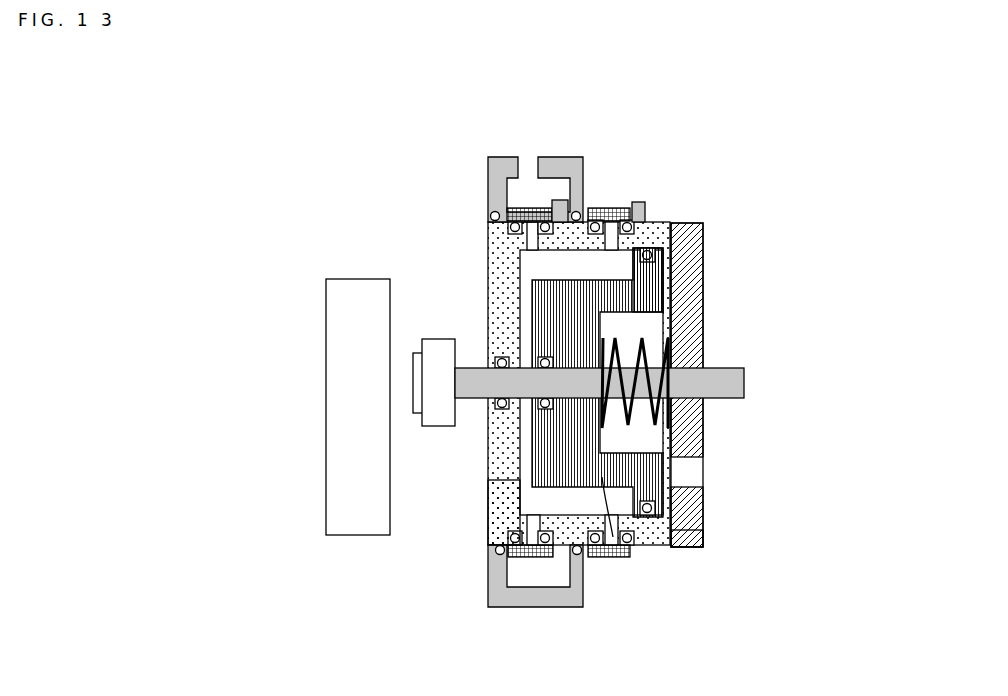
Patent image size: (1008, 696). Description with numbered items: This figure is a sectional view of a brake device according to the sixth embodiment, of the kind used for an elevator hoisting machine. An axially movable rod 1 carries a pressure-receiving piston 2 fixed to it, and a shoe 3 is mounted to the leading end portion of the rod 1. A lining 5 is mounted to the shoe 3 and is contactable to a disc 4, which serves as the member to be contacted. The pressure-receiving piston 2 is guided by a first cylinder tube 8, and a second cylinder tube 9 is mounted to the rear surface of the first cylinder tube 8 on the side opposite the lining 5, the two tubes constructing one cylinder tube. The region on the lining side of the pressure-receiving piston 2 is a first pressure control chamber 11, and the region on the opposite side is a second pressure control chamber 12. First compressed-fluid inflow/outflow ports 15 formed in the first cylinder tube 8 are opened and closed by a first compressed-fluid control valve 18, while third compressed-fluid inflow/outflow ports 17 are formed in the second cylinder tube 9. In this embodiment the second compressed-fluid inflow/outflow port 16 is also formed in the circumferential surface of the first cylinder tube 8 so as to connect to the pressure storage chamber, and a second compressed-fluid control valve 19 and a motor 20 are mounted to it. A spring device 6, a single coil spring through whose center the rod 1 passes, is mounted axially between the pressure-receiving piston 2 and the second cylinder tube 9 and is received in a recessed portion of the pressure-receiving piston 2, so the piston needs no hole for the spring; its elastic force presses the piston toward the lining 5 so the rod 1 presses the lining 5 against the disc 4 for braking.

The rod 1 is at (720, 385).
The pressure-receiving piston 2 is at (618, 532).
The shoe 3 is at (437, 397).
The disc 4 is at (350, 367).
The lining 5 is at (417, 377).
The spring device 6 is at (645, 350).
The first cylinder tube 8 is at (500, 515).
The second cylinder tube 9 is at (687, 537).
The first pressure control chamber 11 is at (538, 498).
The second pressure control chamber 12 is at (703, 432).
The first compressed-fluid inflow/outflow port 15 is at (530, 238).
The second compressed-fluid inflow/outflow port 16 is at (617, 240).
The third compressed-fluid inflow/outflow port 17 is at (688, 477).
The first compressed-fluid control valve 18 is at (522, 208).
The second compressed-fluid control valve 19 is at (612, 210).
The motor 20 is at (558, 208).